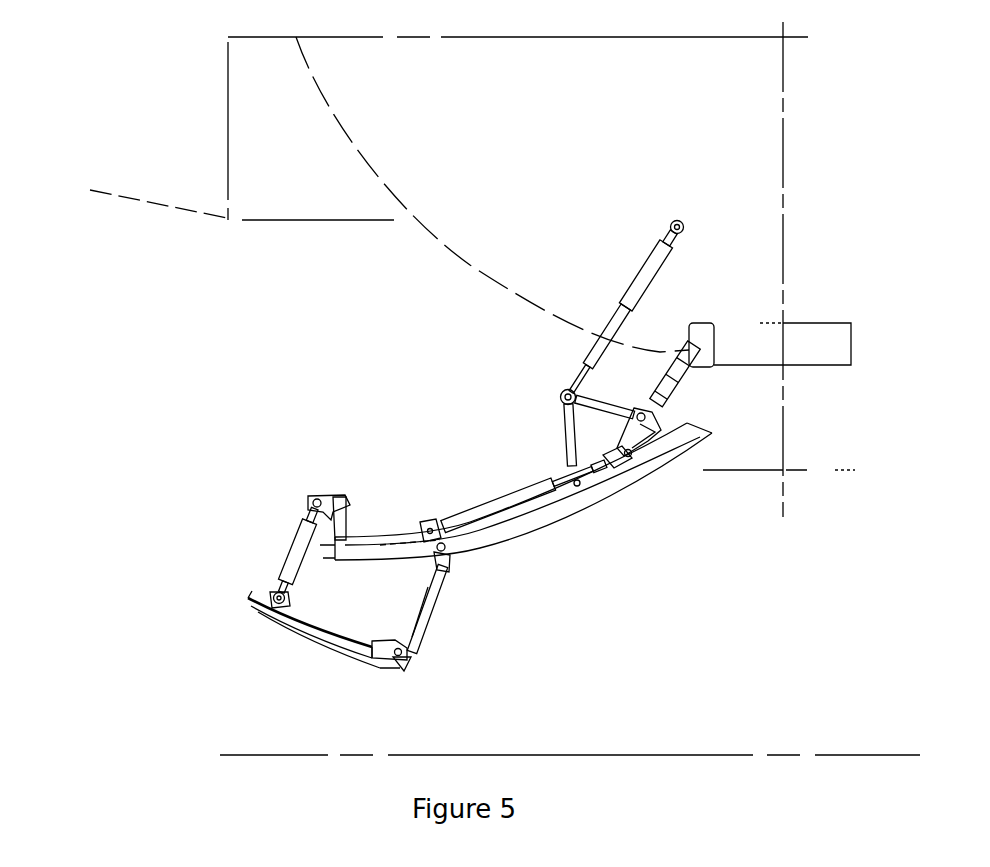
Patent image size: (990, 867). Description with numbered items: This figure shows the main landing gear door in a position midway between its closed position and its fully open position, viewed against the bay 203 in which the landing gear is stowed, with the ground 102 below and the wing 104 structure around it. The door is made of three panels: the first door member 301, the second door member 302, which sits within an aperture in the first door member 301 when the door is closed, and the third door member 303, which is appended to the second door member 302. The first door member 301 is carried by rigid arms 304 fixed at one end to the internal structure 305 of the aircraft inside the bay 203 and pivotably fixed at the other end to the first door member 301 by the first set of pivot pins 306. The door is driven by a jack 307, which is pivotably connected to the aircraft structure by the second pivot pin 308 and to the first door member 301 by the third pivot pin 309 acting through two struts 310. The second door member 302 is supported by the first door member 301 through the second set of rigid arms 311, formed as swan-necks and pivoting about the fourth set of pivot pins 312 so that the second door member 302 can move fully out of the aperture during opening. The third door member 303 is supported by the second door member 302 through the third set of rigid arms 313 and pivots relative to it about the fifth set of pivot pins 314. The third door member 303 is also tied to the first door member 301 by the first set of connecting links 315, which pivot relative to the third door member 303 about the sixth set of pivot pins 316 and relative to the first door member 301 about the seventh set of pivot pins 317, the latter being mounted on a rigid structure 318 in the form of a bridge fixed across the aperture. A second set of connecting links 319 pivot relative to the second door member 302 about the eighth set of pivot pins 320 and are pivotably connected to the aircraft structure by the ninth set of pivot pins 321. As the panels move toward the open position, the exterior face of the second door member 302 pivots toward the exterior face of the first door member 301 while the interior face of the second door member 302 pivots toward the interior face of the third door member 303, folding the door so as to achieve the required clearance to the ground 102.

The ground 102 is at (920, 755).
The wings 104 is at (190, 212).
The bay 203 is at (693, 83).
The first door member 301 is at (558, 530).
The second door member 302 is at (449, 582).
The third door member 303 is at (297, 637).
The rigid arms 304 is at (697, 408).
The internal structure 305 is at (695, 322).
The first set of pivot pins 306 is at (655, 408).
The jack 307 is at (628, 296).
The second pivot pin 308 is at (676, 220).
The third pivot pin 309 is at (562, 391).
The struts 310 is at (591, 338).
The second set of rigid arms 311 is at (392, 657).
The fourth set of pivot pins 312 is at (444, 547).
The third set of rigid arms 313 is at (388, 661).
The fifth set of pivot pins 314 is at (402, 666).
The first set of connecting links 315 is at (303, 515).
The sixth set of pivot pins 316 is at (278, 593).
The seventh set of pivot pins 317 is at (312, 500).
The rigid structure 318 is at (343, 497).
The second set of connecting links 319 is at (520, 495).
The eighth set of pivot pins 320 is at (427, 530).
The ninth set of pivot pins 321 is at (625, 460).